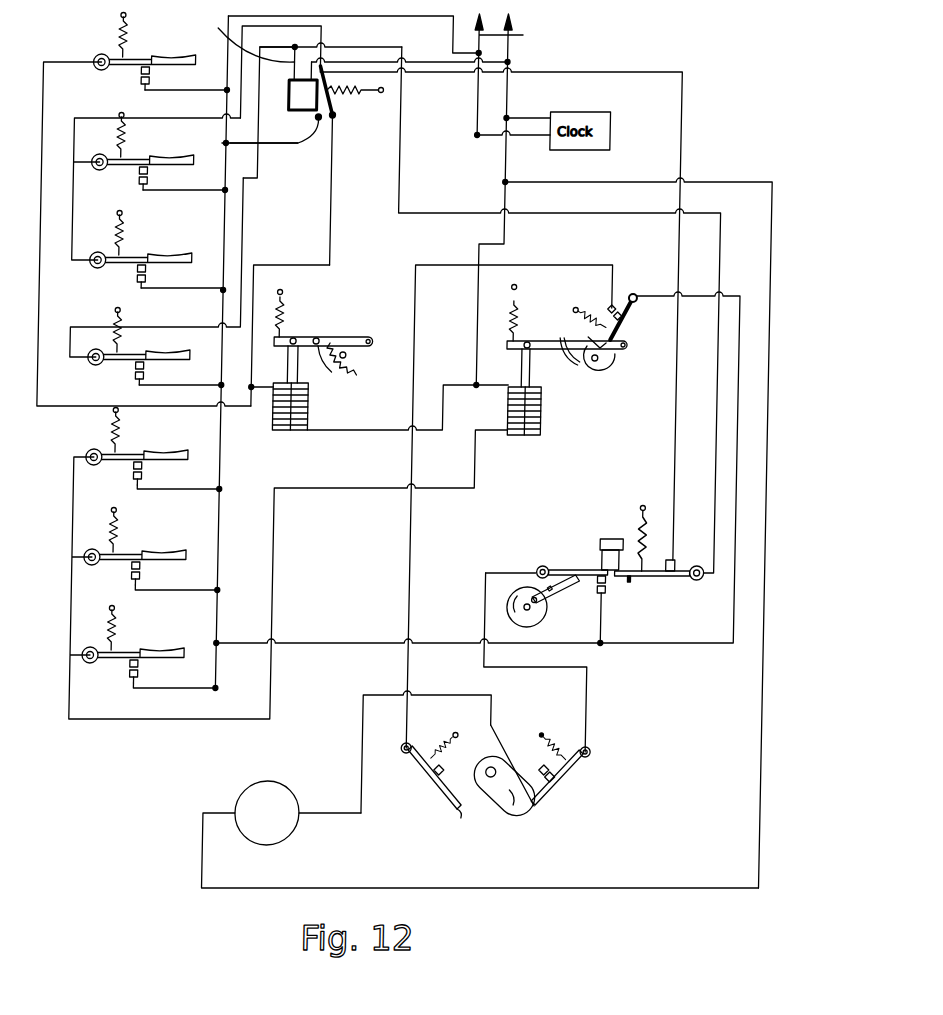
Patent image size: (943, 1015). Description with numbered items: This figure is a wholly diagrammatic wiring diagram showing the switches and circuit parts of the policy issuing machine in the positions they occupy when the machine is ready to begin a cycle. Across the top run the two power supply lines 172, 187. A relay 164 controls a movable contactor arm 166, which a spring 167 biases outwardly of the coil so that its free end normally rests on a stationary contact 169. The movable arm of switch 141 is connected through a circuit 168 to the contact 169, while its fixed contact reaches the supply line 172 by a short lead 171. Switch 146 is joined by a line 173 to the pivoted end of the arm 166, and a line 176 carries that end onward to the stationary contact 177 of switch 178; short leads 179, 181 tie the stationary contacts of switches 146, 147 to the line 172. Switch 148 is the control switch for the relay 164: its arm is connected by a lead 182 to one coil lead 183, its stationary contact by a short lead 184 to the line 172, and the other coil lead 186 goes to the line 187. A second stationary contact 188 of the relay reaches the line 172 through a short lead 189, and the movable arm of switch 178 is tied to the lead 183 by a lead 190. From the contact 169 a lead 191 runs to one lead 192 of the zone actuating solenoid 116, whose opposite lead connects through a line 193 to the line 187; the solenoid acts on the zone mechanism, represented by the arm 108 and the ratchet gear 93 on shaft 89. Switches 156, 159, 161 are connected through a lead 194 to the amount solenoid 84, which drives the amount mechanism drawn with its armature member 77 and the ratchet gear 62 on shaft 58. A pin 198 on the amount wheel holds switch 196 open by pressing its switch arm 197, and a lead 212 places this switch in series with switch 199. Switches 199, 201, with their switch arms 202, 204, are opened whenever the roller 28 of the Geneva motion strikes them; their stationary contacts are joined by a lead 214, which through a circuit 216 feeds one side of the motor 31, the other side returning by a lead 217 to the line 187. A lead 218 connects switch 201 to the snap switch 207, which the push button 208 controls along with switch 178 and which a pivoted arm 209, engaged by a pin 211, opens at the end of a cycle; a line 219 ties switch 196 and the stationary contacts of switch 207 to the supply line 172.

The roller 28 is at (522, 810).
The electric motor 31 is at (284, 785).
The shaft 58 is at (595, 362).
The ratchet gear 62 is at (609, 365).
The relay armature 77 is at (542, 340).
The amount solenoid 84 is at (544, 422).
The shaft 89 is at (346, 355).
The ratchet gear 93 is at (357, 372).
The arm 108 is at (298, 336).
The zone actuating solenoid 116 is at (307, 408).
The switch 141 is at (129, 73).
The switch 146 is at (129, 173).
The switch 147 is at (130, 271).
The control switch 148 is at (130, 369).
The switch 156 is at (128, 473).
The switch 159 is at (128, 569).
The switch 161 is at (130, 667).
The relay 164 is at (292, 105).
The movable contactor arm 166 is at (326, 100).
The spring 167 is at (376, 90).
The circuit 168 is at (60, 410).
The stationary contact 169 is at (330, 120).
The short lead 171 is at (195, 92).
The power supply line 172 is at (223, 476).
The line 173 is at (82, 118).
The line 176 is at (632, 72).
The stationary contact 177 is at (675, 560).
The switch 178 is at (631, 582).
The short lead 179 is at (197, 192).
The short lead 181 is at (202, 292).
The lead 182 is at (241, 243).
The lead 183 is at (252, 67).
The short lead 184 is at (204, 390).
The lead 186 is at (360, 52).
The power supply line 187 is at (500, 53).
The second stationary contact 188 is at (300, 145).
The short lead 189 is at (249, 178).
The lead 190 is at (398, 176).
The lead 191 is at (328, 255).
The lead 192 is at (261, 410).
The line 193 is at (380, 433).
The lead 194 is at (203, 720).
The switch 196 is at (613, 302).
The switch arm 197 is at (625, 312).
The pin 198 is at (610, 350).
The switch 199 is at (462, 792).
The switch 201 is at (584, 775).
The switch arm 202 is at (411, 758).
The switch arm 204 is at (552, 800).
The snap type switch 207 is at (593, 585).
The push button 208 is at (602, 553).
The pivoted arm 209 is at (545, 578).
The pin 211 is at (513, 598).
The lead 212 is at (413, 467).
The lead 214 is at (505, 738).
The circuit 216 is at (365, 697).
The lead 217 is at (483, 888).
The lead 218 is at (602, 668).
The line 219 is at (738, 640).